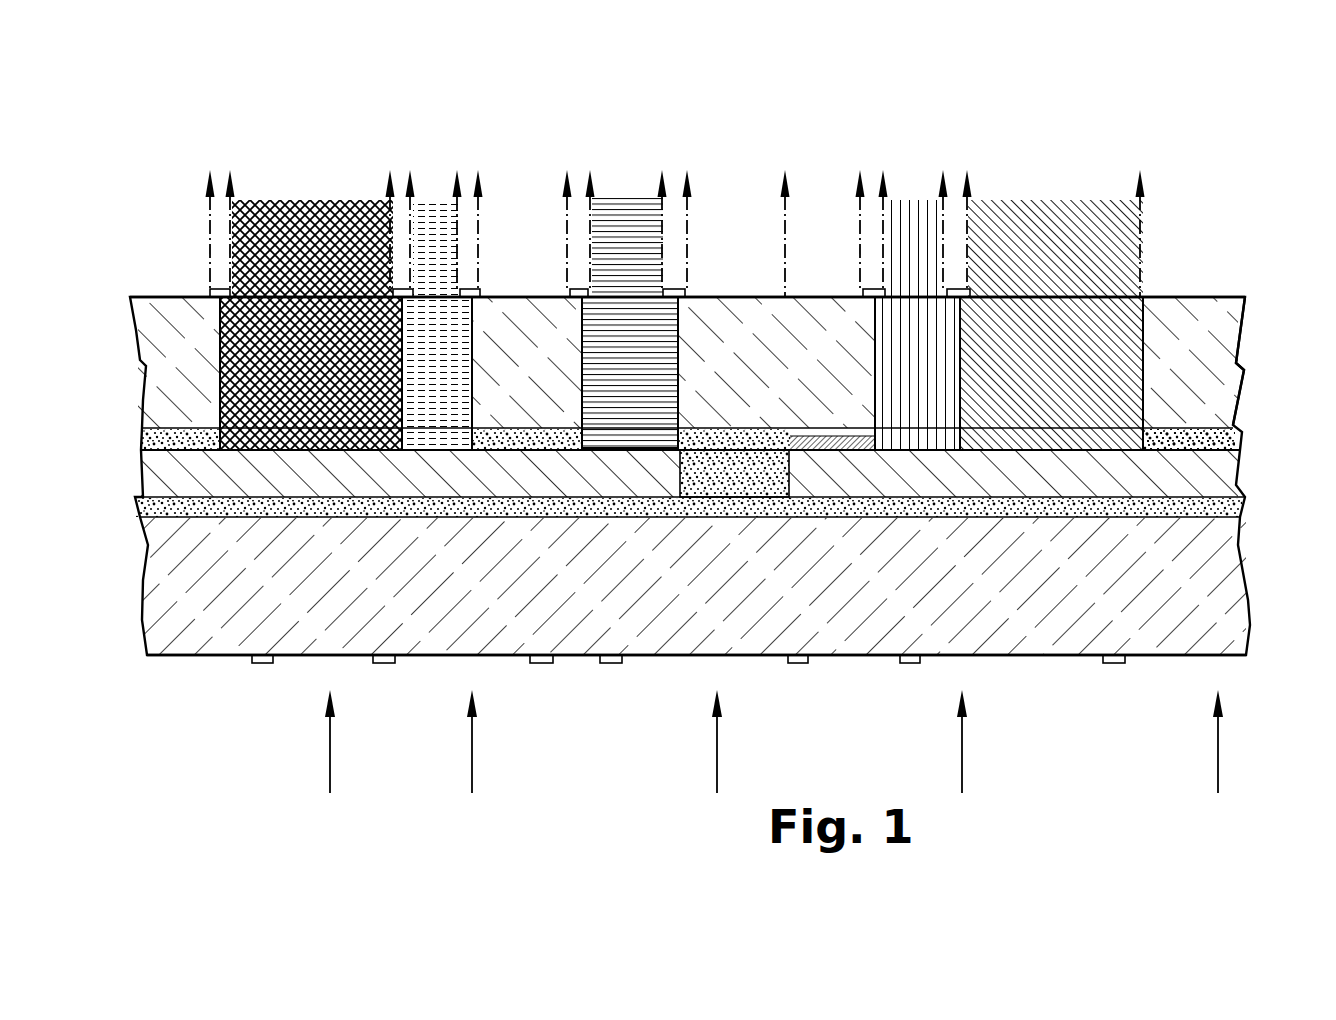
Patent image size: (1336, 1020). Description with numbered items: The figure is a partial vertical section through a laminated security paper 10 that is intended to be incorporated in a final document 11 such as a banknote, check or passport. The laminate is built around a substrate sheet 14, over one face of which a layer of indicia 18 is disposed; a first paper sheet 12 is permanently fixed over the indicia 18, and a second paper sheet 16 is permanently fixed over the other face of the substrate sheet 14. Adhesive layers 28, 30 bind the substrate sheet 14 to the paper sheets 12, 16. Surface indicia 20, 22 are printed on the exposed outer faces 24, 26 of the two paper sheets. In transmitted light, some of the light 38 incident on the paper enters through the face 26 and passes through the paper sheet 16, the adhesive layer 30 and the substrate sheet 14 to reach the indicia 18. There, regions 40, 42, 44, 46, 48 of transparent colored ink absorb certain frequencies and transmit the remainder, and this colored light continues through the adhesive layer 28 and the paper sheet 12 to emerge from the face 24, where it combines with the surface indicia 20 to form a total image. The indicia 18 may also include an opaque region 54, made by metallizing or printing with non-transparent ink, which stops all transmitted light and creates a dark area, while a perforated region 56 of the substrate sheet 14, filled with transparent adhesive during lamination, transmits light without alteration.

The laminated security paper 10 is at (1230, 286).
The final document 11 is at (1243, 318).
The first paper sheet 12 is at (145, 372).
The substrate sheet 14 is at (148, 476).
The second paper sheet 16 is at (145, 580).
The indicia 18 is at (143, 440).
The surface indicia 20 is at (213, 289).
The surface indicia 22 is at (262, 664).
The outer face 24 is at (163, 297).
The outer face 26 is at (170, 657).
The adhesive layer 28 is at (1242, 438).
The adhesive layer 30 is at (1243, 498).
The light 38 is at (472, 780).
The region of transparent color 40 is at (355, 440).
The region of transparent color 42 is at (432, 443).
The region of transparent color 44 is at (628, 443).
The region of transparent color 46 is at (920, 445).
The region of transparent color 48 is at (1003, 430).
The opaque region 54 is at (808, 440).
The perforated region 56 is at (730, 468).